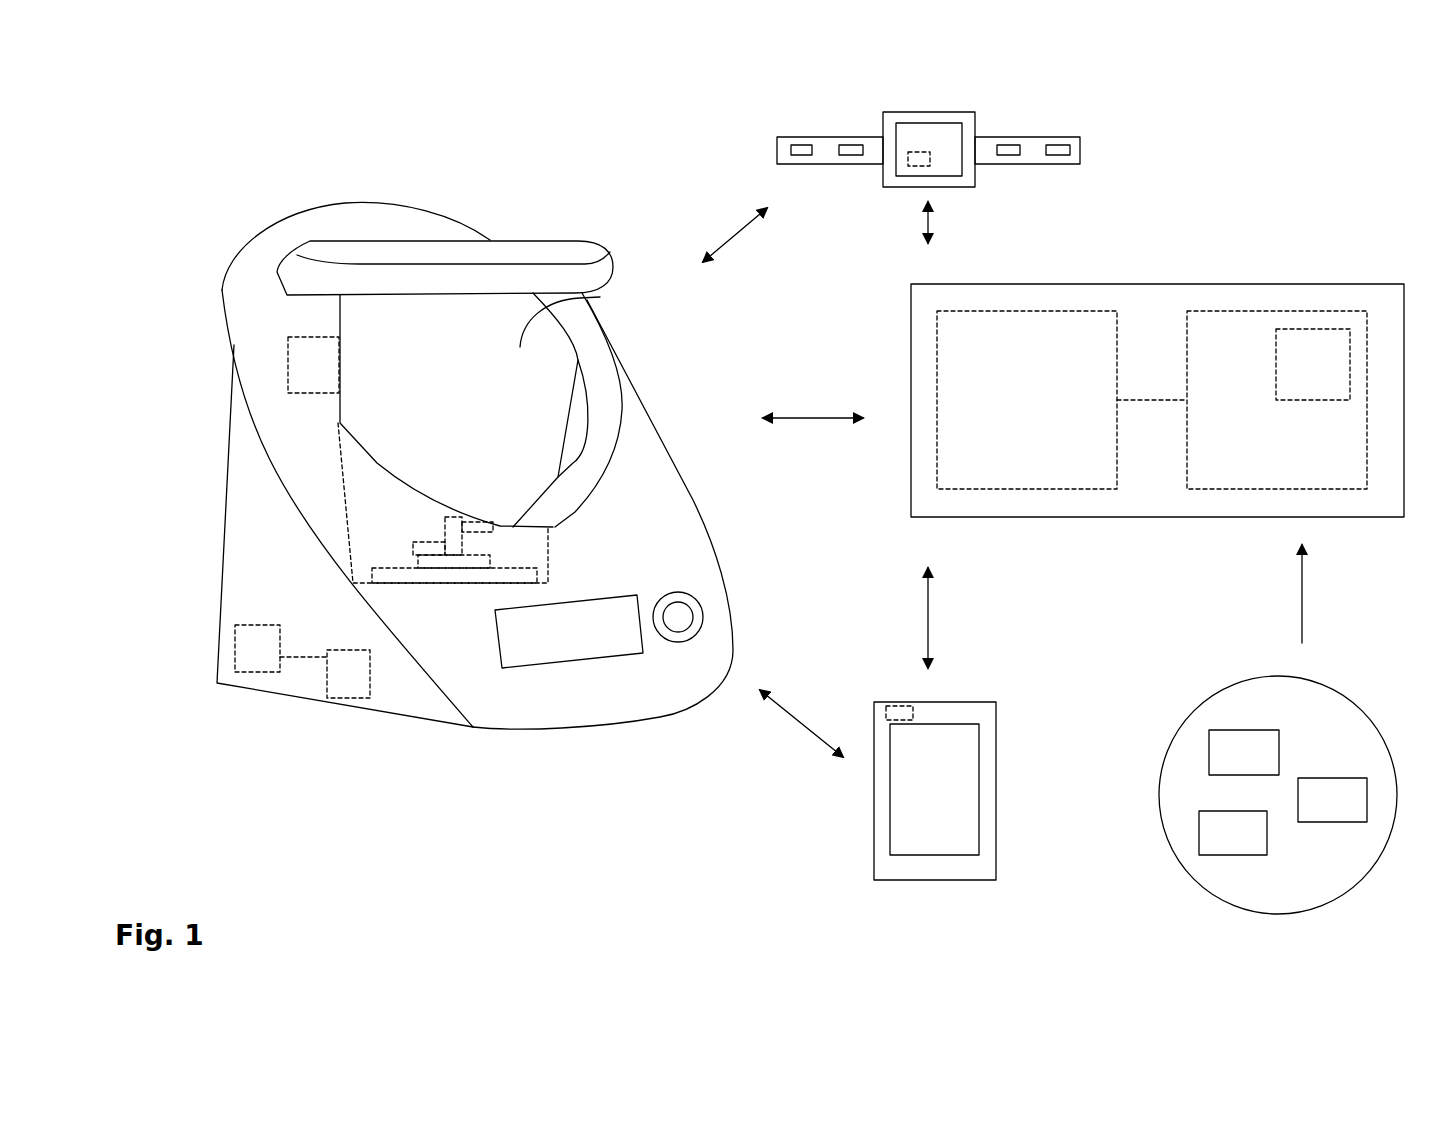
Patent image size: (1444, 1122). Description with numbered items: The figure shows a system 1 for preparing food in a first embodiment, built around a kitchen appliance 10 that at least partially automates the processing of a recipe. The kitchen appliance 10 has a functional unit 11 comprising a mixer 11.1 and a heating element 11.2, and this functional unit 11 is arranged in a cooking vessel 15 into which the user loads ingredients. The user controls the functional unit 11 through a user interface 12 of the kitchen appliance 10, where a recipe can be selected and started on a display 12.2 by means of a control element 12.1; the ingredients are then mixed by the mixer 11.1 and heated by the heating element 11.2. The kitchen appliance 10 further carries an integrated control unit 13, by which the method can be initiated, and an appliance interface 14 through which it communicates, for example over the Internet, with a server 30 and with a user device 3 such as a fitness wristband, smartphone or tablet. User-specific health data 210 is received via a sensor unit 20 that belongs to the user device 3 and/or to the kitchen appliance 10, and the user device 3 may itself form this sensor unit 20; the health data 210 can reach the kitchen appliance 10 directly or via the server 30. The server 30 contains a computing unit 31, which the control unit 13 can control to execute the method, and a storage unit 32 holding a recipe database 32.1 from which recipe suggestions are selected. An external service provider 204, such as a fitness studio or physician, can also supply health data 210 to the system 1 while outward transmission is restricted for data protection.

The system 1 is at (1358, 144).
The kitchen appliance 10 is at (206, 186).
The functional unit 11 is at (436, 462).
The mixer 11.1 is at (457, 527).
The heating element 11.2 is at (513, 578).
The user interface 12 is at (604, 684).
The control element 12.1 is at (695, 598).
The display 12.2 is at (508, 657).
The control unit 13 is at (343, 688).
The appliance interface 14 is at (248, 667).
The cooking vessel 15 is at (600, 297).
The sensor unit 20 is at (288, 365).
The user device 3 is at (968, 121).
The server 30 is at (1183, 517).
The computing unit 31 is at (980, 311).
The storage unit 32 is at (1207, 310).
The recipe database 32.1 is at (1323, 329).
The external service provider 204 is at (1237, 737).
The health data 210 is at (737, 233).